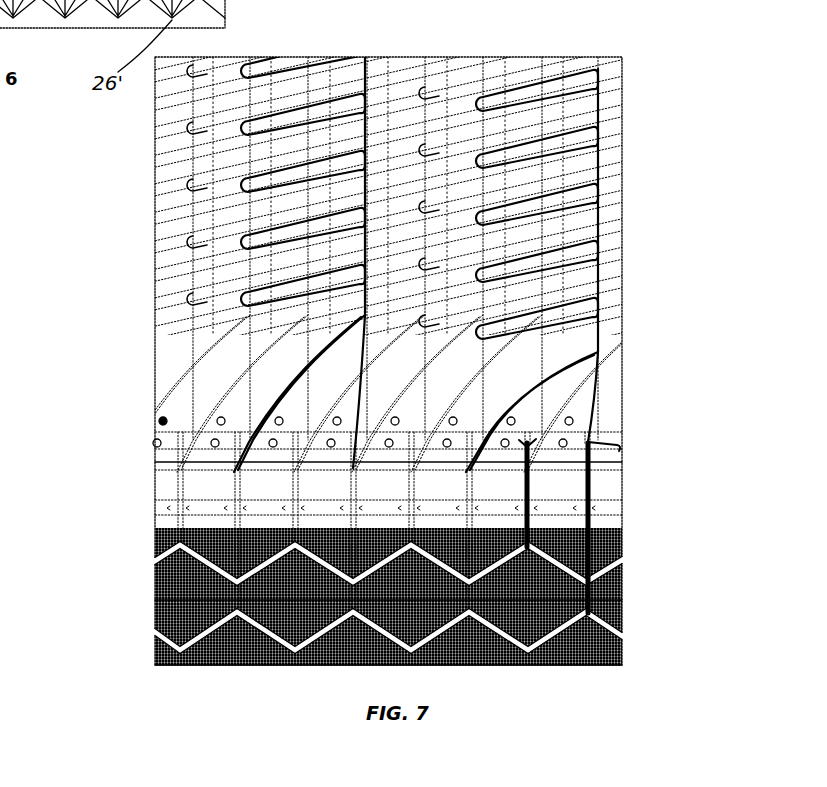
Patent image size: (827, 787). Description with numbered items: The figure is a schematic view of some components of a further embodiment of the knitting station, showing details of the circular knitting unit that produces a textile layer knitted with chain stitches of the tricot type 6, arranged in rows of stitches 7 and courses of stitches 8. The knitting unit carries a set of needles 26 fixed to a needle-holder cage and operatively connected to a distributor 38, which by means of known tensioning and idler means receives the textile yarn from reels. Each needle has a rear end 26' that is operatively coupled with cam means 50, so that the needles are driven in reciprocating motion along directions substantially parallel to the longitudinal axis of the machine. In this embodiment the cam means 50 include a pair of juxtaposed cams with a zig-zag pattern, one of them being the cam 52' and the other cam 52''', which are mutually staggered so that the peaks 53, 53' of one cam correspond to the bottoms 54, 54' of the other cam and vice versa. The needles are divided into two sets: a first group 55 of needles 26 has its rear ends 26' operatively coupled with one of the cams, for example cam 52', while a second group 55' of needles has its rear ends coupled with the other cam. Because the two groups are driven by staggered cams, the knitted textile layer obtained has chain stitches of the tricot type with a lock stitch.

The chain stitches of the tricot type 6 is at (208, 117).
The rows of stitches 7 is at (630, 138).
The courses of stitches 8 is at (366, 48).
The needles 26 is at (594, 493).
The rear end of needle 26' is at (574, 538).
The distributor 38 is at (155, 452).
The cam means 50 is at (88, 560).
The cam 52' is at (423, 564).
The channel 52''' is at (358, 663).
The peak of cam 53 is at (346, 522).
The peak of cam 53' is at (423, 627).
The bottom of cam 54 is at (361, 573).
The bottom of cam 54' is at (417, 645).
The first group of needles 55 is at (346, 469).
The second group of needles 55' is at (353, 626).